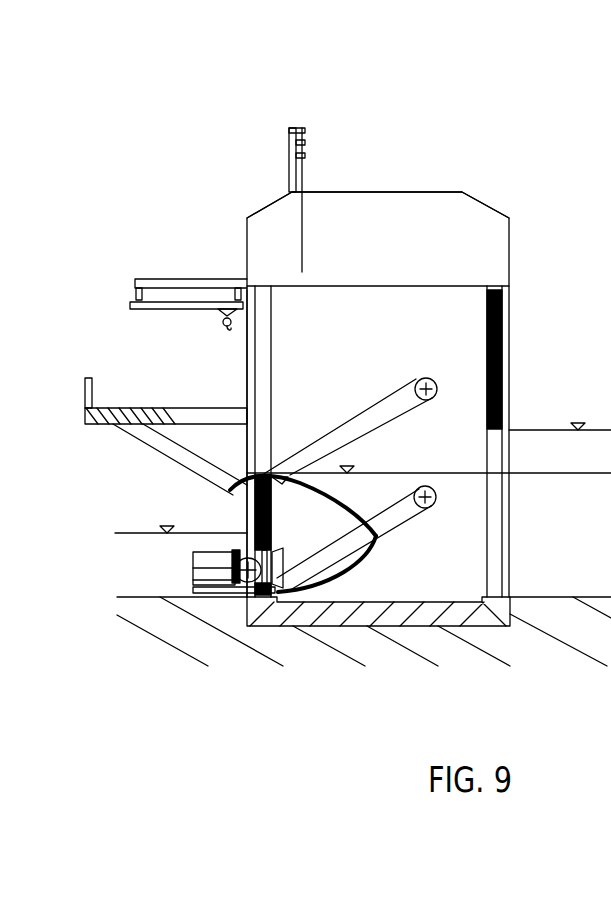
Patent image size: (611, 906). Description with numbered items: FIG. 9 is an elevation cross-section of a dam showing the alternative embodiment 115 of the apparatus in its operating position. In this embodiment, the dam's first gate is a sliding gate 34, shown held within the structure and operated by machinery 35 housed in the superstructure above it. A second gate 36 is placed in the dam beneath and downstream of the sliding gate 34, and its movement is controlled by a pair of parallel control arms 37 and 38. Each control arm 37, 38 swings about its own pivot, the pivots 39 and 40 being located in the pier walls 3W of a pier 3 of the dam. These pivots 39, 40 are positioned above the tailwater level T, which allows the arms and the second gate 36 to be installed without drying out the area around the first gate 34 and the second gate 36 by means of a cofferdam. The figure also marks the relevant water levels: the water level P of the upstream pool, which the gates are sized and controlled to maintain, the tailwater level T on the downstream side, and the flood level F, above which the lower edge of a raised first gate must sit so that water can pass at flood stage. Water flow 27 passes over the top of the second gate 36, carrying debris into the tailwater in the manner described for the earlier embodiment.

The alternative embodiment 115 is at (450, 128).
The pier 3 is at (287, 375).
The pier wall 3W is at (320, 330).
The machinery 35 is at (378, 267).
The sliding gate 34 is at (502, 330).
The second gate 36 is at (274, 508).
The flow 27 is at (226, 528).
The control arm 37 is at (388, 503).
The control arm 38 is at (375, 405).
The pivot 39 is at (432, 487).
The pivot 40 is at (430, 378).
The tailwater level T is at (181, 514).
The water level of upstream pool P is at (350, 465).
The flood level F is at (560, 410).